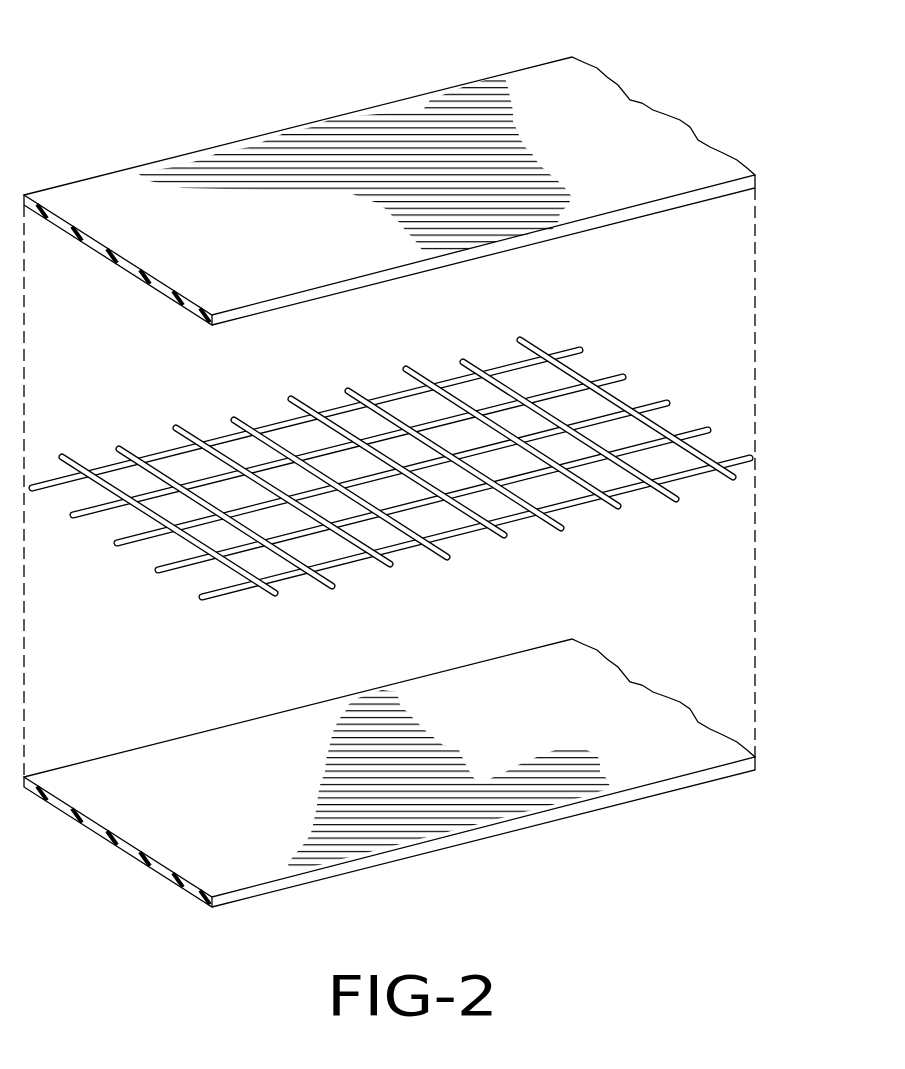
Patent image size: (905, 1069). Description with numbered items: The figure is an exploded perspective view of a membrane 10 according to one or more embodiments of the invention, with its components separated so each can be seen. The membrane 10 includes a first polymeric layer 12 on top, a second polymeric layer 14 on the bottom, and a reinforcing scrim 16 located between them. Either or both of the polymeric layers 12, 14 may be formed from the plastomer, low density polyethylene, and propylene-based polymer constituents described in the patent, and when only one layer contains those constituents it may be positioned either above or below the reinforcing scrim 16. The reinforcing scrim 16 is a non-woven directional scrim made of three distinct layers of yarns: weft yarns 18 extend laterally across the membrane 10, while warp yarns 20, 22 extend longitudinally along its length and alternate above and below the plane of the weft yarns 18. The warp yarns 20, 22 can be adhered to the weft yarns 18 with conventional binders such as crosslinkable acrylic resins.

The membrane 10 is at (452, 458).
The first polymeric layer 12 is at (590, 107).
The second polymeric layer 14 is at (598, 687).
The reinforcing scrim 16 is at (391, 465).
The weft yarns 18 is at (155, 455).
The warp yarn 20 is at (397, 507).
The warp yarn 22 is at (263, 593).